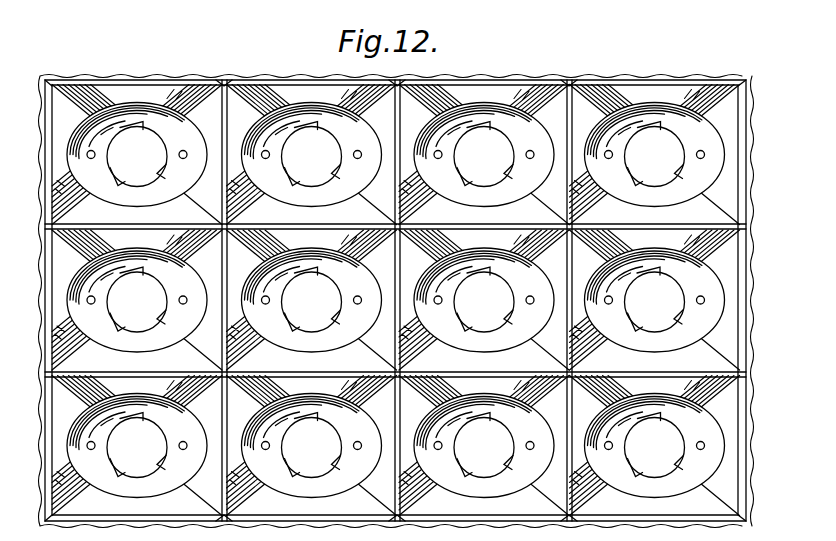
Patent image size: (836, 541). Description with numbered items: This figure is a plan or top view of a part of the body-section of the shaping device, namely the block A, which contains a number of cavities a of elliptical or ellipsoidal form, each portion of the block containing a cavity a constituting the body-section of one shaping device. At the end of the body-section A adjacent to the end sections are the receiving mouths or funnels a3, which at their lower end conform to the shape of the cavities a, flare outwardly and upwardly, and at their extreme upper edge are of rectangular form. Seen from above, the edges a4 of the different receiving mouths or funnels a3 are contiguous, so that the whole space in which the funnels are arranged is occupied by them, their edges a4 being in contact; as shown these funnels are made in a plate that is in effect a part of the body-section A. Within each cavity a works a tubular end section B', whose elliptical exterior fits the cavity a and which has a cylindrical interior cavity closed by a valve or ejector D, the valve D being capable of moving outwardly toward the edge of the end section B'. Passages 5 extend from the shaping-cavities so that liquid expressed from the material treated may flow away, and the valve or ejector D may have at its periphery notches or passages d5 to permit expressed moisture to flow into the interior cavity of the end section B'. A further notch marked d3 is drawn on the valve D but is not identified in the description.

The block A is at (396, 292).
The cavities a is at (667, 207).
The receiving mouths or funnels a3 is at (396, 300).
The edges a4 is at (332, 512).
The end section B' is at (386, 278).
The valve or ejector D is at (396, 302).
The notches or passages d5 is at (636, 174).
The lug d3 is at (631, 324).
The passages 5 is at (92, 305).